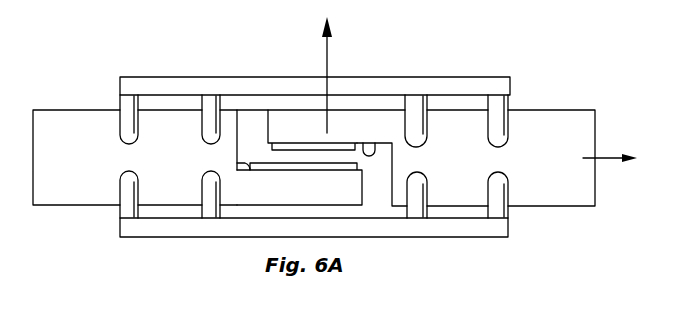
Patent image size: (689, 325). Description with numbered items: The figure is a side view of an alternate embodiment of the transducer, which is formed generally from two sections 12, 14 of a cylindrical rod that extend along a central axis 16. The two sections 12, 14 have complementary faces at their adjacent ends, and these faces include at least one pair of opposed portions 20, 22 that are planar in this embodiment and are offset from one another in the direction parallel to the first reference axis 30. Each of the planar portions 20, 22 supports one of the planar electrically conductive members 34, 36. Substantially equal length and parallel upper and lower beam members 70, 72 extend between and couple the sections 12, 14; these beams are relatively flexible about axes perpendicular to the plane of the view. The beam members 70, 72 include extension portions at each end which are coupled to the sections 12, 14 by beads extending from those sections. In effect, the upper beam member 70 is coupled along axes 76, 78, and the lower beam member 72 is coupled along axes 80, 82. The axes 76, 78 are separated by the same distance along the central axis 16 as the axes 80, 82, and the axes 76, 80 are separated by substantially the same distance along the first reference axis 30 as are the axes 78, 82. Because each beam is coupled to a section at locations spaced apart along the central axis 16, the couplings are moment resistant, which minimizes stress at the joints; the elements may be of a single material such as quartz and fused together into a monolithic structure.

The section 12 is at (52, 127).
The section 14 is at (520, 115).
The central axis 16 is at (615, 160).
The opposed portion 20 is at (237, 157).
The opposed portion 22 is at (371, 149).
The first reference axis 30 is at (325, 66).
The planar electrically conductive member 34 is at (250, 164).
The planar electrically conductive member 36 is at (307, 147).
The upper beam member 70 is at (375, 86).
The lower beam member 72 is at (265, 228).
The coupling axis 76 is at (212, 86).
The coupling axis 78 is at (415, 86).
The coupling axis 80 is at (212, 228).
The coupling axis 82 is at (415, 228).